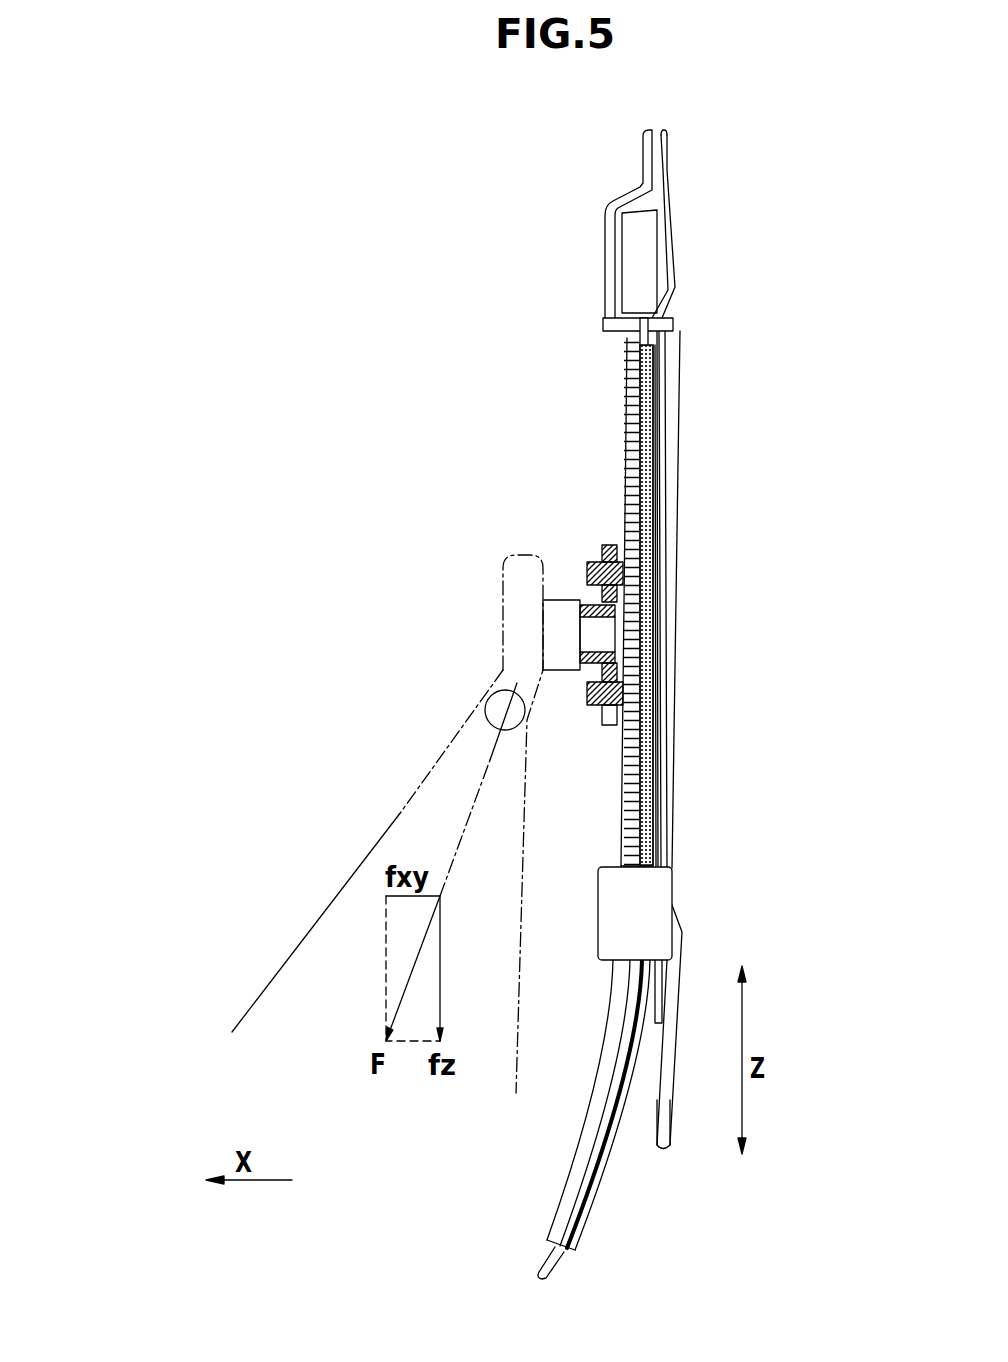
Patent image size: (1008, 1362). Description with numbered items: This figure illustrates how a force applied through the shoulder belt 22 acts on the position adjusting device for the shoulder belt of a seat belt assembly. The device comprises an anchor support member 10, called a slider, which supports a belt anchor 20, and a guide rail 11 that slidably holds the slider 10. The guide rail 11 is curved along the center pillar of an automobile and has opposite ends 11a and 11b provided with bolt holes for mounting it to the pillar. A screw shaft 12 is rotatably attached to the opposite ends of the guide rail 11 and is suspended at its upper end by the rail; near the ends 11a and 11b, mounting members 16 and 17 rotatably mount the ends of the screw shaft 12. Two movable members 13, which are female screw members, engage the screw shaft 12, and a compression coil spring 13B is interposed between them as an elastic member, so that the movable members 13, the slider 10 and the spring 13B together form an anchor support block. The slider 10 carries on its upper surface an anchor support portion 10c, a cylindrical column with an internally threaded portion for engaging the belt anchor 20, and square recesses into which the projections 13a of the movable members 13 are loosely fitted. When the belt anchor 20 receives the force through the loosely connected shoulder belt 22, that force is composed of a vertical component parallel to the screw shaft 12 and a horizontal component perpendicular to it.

The anchor support member 10 is at (606, 733).
The anchor support portion 10c is at (577, 677).
The guide rail 11 is at (680, 437).
The opposite end 11a is at (673, 238).
The opposite end 11b is at (657, 1150).
The screw shaft 12 is at (657, 737).
The movable members 13 is at (579, 562).
The projections 13a is at (592, 560).
The compression coil spring 13B is at (667, 600).
The mounting member 16 is at (597, 933).
The mounting member 17 is at (607, 258).
The belt anchor 20 is at (487, 566).
The shoulder belt 22 is at (359, 869).